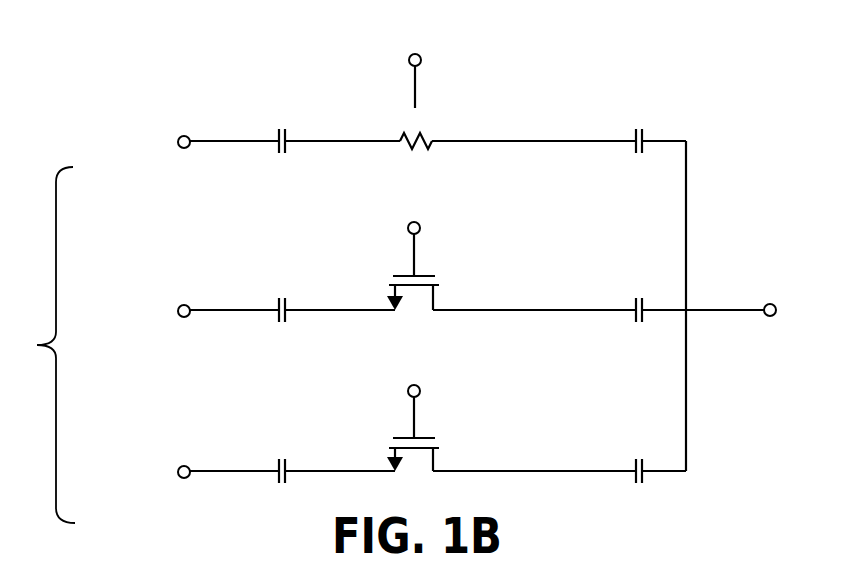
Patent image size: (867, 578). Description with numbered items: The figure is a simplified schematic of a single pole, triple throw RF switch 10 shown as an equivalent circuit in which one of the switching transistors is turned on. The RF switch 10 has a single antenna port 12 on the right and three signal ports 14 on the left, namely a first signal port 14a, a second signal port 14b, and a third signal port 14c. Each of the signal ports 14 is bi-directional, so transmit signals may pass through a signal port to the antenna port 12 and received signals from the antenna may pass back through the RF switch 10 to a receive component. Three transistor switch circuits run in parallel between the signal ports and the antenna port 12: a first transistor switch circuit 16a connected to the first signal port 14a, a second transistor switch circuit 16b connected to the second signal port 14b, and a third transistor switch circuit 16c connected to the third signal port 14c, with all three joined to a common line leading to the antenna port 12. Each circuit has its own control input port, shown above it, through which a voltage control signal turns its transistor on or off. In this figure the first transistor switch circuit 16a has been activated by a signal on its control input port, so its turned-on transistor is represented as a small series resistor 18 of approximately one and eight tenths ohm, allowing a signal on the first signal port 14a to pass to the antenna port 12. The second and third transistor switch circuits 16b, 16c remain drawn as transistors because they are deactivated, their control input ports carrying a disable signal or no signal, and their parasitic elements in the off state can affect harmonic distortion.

The RF switch 10 is at (142, 97).
The antenna port 12 is at (770, 304).
The signal ports 14 is at (101, 326).
The first signal port 14a is at (183, 149).
The second signal port 14b is at (183, 318).
The third signal port 14c is at (183, 479).
The first transistor switch circuit 16a is at (498, 120).
The second transistor switch circuit 16b is at (492, 270).
The third transistor switch circuit 16c is at (492, 425).
The series resistor 18 is at (417, 152).